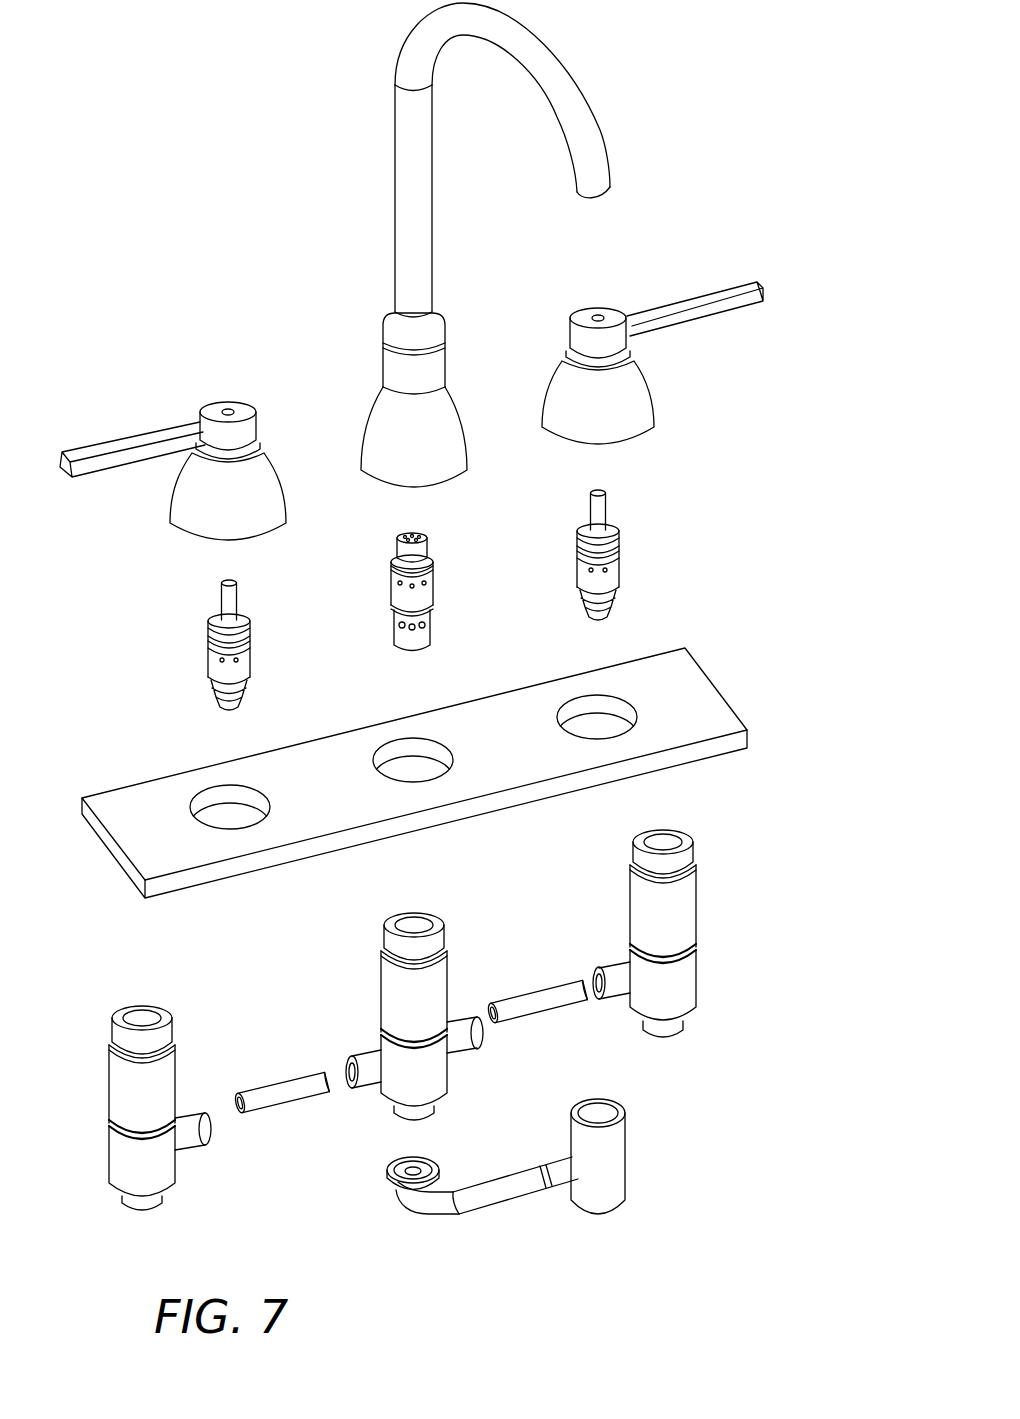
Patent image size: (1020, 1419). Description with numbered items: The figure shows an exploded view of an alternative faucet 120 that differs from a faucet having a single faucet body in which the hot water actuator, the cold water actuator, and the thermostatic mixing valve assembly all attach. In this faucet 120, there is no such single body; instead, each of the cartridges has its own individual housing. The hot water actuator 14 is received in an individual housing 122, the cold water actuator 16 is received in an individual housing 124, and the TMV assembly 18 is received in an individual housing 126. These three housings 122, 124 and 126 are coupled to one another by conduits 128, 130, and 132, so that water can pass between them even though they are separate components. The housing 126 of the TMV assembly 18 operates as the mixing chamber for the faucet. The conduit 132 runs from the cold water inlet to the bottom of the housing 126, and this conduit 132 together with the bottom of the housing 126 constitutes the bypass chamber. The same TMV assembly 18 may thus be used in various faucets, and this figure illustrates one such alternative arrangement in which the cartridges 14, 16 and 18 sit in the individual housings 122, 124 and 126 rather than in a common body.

The faucet 120 is at (731, 169).
The hot water actuator 14 is at (255, 651).
The cold water actuator 16 is at (621, 561).
The TMV assembly 18 is at (436, 584).
The housing 122 is at (176, 1058).
The housing 124 is at (697, 906).
The housing 126 is at (448, 976).
The conduit 128 is at (290, 1080).
The conduit 130 is at (560, 985).
The conduit 132 is at (500, 1205).